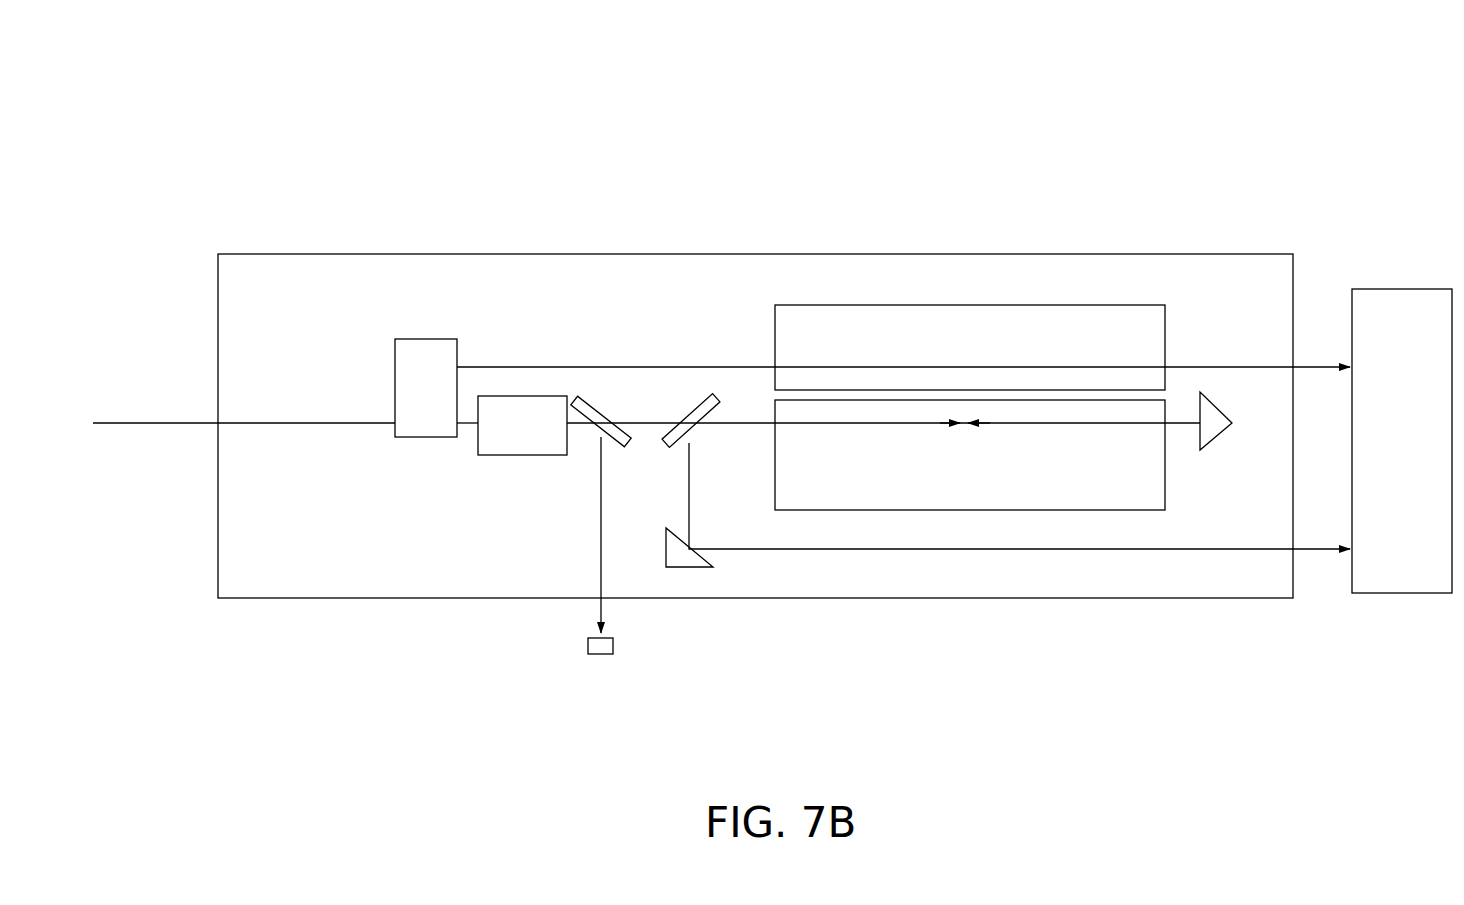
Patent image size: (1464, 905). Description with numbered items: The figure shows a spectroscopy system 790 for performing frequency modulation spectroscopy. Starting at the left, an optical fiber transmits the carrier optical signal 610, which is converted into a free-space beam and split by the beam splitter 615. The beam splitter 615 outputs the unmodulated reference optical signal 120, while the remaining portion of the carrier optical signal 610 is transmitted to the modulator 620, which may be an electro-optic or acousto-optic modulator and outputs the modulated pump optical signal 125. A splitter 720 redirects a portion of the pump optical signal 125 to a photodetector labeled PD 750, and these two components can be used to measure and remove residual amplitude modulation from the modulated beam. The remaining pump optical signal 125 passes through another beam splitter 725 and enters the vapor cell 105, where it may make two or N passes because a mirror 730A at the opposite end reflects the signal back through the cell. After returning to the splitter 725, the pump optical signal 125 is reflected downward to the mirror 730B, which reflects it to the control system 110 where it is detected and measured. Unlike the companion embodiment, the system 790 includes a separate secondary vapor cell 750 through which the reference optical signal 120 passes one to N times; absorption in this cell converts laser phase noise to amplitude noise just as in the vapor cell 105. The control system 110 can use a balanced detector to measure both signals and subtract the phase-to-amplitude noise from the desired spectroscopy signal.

The spectroscopy system 790 is at (282, 163).
The carrier optical signal 610 is at (473, 500).
The beam splitter 615 is at (423, 339).
The modulator 620 is at (520, 456).
The reference optical signal 120 is at (597, 367).
The pump optical signal 125 is at (737, 423).
The secondary vapor cell 750 is at (967, 305).
The vapor cell 105 is at (1033, 512).
The splitter 720 is at (602, 437).
The beam splitter 725 is at (692, 435).
The mirror 730A is at (1200, 448).
The mirror 730B is at (688, 570).
The control system 110 is at (1424, 352).